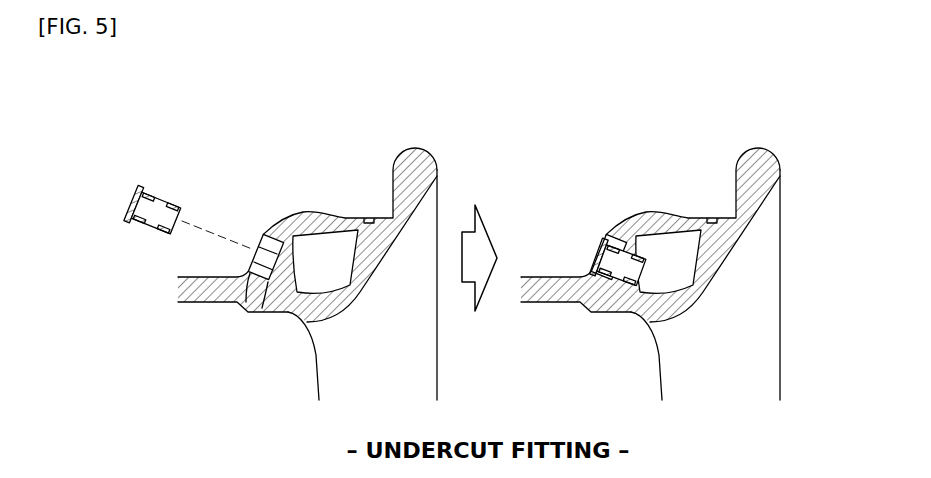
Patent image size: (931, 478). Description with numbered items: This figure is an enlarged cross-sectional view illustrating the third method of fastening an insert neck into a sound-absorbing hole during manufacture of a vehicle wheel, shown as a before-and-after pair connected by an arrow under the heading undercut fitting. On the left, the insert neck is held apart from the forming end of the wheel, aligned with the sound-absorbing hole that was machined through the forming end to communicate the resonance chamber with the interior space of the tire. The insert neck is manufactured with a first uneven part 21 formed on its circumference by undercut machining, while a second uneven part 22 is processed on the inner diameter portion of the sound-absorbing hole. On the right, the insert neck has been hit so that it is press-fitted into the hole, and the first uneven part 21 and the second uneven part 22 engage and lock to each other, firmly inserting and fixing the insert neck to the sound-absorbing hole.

The first uneven part 21 is at (163, 196).
The second uneven part 22 is at (252, 303).